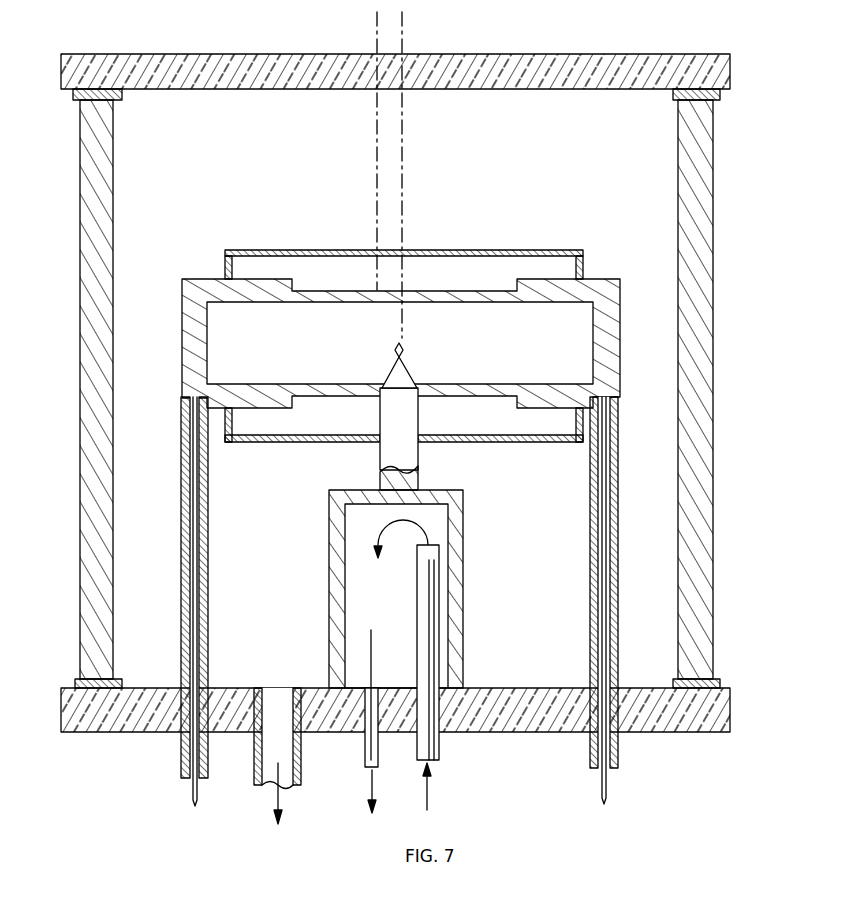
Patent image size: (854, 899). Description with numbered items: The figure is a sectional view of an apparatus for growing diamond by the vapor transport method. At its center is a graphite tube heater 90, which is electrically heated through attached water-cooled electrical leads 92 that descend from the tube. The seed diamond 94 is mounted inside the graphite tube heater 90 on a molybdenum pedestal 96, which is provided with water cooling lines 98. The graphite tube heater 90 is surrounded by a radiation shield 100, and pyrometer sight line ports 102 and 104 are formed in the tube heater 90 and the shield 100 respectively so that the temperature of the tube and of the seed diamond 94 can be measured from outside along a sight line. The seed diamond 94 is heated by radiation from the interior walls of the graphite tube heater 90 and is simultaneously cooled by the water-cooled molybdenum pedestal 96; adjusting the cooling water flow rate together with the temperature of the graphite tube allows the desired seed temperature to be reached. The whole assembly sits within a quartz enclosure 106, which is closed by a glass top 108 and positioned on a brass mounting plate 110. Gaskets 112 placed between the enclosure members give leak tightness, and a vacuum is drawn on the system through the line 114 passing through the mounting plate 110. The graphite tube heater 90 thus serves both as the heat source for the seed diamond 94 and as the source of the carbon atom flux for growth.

The graphite tube heater 90 is at (190, 350).
The water-cooled electrical leads 92 is at (180, 583).
The seed diamond 94 is at (403, 348).
The molybdenum pedestal 96 is at (465, 565).
The water cooling lines 98 is at (422, 737).
The radiation shield 100 is at (497, 250).
The pyrometer sight line port 102 is at (402, 292).
The pyrometer sight line port 104 is at (375, 250).
The quartz enclosure 106 is at (107, 418).
The glass top 108 is at (302, 72).
The brass mounting plate 110 is at (132, 715).
The gaskets 112 is at (677, 91).
The vacuum line 114 is at (298, 773).